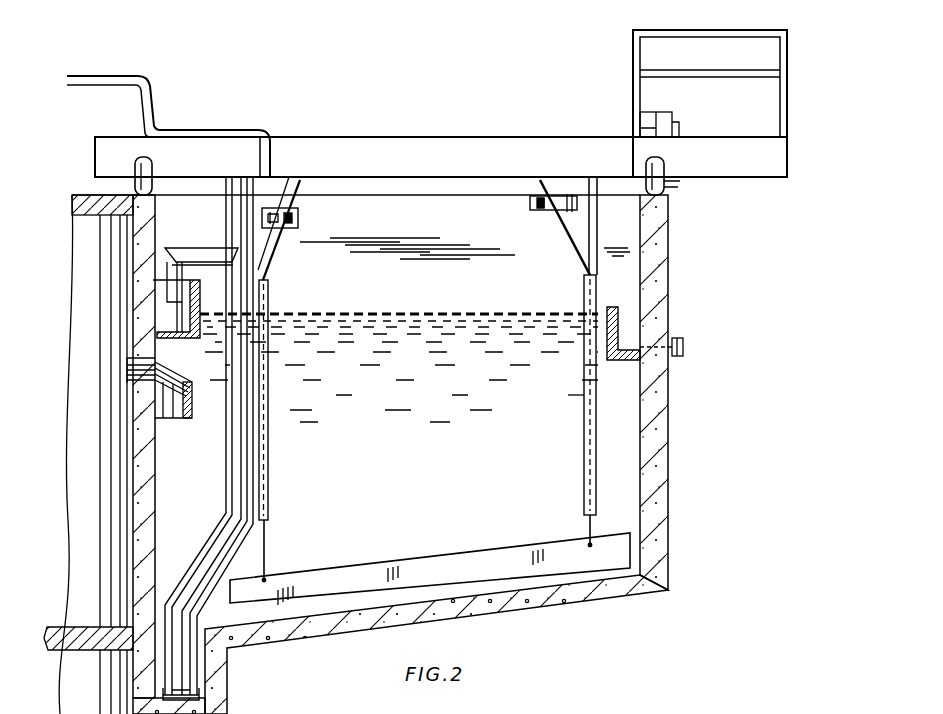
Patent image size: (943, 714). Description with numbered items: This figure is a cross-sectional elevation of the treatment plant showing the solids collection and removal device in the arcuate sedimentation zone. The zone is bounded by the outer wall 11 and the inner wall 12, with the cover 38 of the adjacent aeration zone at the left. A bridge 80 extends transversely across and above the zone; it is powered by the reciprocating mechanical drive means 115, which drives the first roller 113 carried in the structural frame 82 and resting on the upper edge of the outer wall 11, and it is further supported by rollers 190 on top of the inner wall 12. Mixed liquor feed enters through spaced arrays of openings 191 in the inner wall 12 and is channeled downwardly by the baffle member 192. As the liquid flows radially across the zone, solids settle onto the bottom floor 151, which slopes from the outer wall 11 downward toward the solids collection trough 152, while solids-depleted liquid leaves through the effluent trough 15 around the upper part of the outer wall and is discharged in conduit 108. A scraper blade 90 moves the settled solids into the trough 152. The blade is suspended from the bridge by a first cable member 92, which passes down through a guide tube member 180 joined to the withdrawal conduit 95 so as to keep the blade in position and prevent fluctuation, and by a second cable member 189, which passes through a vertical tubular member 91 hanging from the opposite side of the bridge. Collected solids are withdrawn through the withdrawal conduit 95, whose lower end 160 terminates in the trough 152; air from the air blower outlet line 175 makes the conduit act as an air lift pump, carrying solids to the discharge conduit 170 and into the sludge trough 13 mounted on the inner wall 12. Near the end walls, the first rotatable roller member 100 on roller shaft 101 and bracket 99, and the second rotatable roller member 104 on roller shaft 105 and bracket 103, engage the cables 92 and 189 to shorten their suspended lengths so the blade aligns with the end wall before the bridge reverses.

The outer wall 11 is at (668, 458).
The inner wall 12 is at (140, 448).
The sludge trough 13 is at (168, 337).
The effluent trough 15 is at (620, 325).
The cover 38 is at (90, 212).
The bridge 80 is at (435, 150).
The structural frame 82 is at (803, 37).
The scraper blade 90 is at (407, 545).
The vertical tubular member 91 is at (594, 235).
The first cable member 92 is at (270, 262).
The withdrawal conduit 95 is at (233, 463).
The bracket 99 is at (295, 180).
The first rotatable roller member 100 is at (285, 232).
The roller shaft 101 is at (296, 225).
The bracket 103 is at (535, 205).
The second rotatable roller member 104 is at (545, 213).
The roller shaft 105 is at (532, 208).
The conduit 108 is at (683, 348).
The first roller 113 is at (668, 188).
The reciprocating mechanical drive means 115 is at (643, 120).
The bottom floor 151 is at (498, 610).
The solids collection trough 152 is at (224, 705).
The lower end 160 is at (187, 672).
The discharge conduit 170 is at (204, 252).
The air blower outlet line 175 is at (189, 131).
The guide tube member 180 is at (272, 460).
The second cable member 189 is at (570, 250).
The rollers 190 is at (138, 184).
The openings 191 is at (128, 380).
The baffle member 192 is at (193, 398).